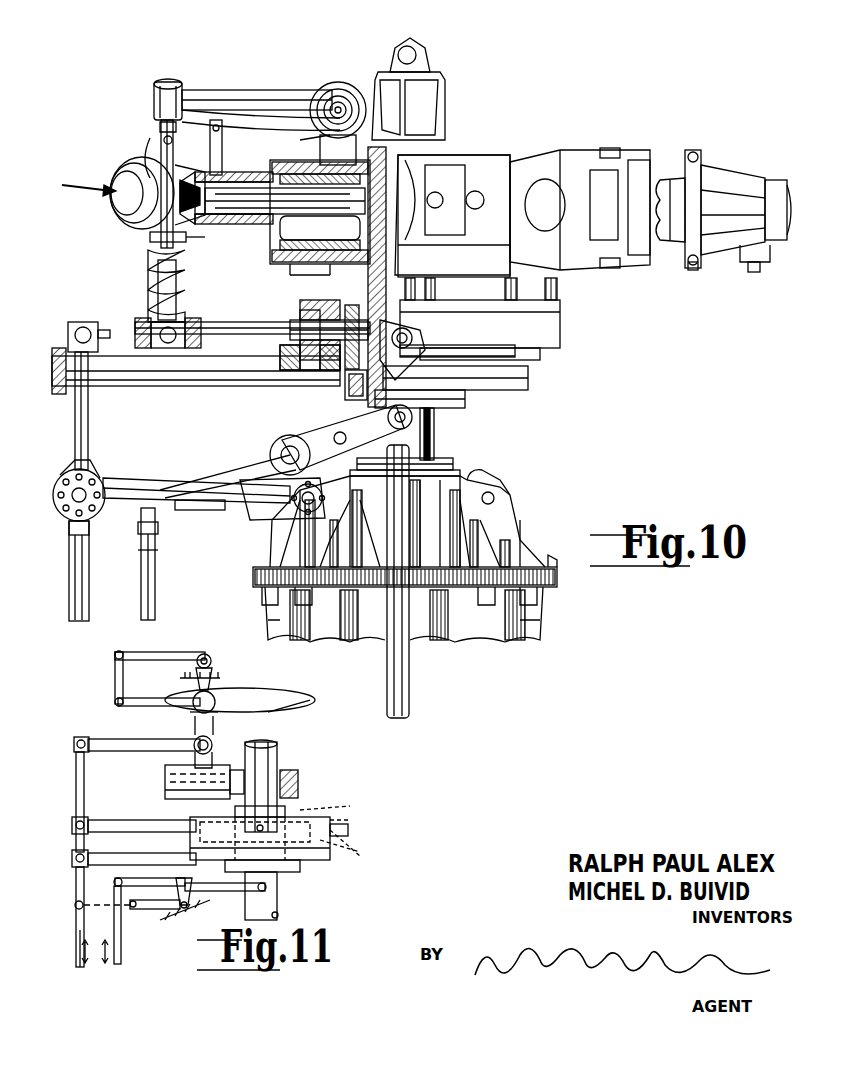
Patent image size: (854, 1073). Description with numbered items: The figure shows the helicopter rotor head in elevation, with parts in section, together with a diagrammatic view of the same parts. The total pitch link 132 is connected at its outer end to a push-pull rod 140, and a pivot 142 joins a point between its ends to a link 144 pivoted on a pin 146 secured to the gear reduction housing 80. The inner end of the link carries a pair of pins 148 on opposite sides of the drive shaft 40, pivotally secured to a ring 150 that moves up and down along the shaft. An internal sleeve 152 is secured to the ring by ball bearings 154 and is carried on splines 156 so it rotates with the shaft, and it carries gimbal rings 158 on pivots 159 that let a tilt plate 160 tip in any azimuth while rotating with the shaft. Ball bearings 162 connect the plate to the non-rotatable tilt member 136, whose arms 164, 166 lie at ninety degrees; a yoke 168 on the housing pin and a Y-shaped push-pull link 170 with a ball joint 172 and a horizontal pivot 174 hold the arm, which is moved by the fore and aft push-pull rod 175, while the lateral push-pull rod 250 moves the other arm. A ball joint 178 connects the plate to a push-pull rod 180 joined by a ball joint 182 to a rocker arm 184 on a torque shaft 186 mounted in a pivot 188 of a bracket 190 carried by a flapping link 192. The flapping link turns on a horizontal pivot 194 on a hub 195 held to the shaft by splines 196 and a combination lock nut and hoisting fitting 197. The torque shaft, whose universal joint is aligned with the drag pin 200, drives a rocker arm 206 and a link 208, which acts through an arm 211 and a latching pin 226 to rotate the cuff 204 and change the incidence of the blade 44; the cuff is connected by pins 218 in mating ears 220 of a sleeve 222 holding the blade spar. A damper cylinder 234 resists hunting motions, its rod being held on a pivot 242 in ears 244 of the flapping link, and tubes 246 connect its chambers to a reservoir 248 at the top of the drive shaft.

In FIG. 10, the drive shaft 40 is at (440, 470).
In FIG. 11, the drive shaft 40 is at (272, 758).
In FIG. 11, the blade 44 is at (280, 710).
In FIG. 10, the gear reduction housing 80 is at (490, 520).
In FIG. 10, the total pitch link 132 is at (195, 478).
In FIG. 11, the total pitch link 132 is at (206, 884).
In FIG. 10, the tilt member 136 is at (160, 372).
In FIG. 10, the push-pull rod 140 is at (158, 570).
In FIG. 11, the push-pull rod 140 is at (120, 930).
In FIG. 10, the pivot 142 is at (250, 470).
In FIG. 11, the pivot 142 is at (186, 870).
In FIG. 10, the link 144 is at (282, 436).
In FIG. 10, the pin 146 is at (305, 508).
In FIG. 11, the pin 146 is at (195, 915).
In FIG. 10, the pins 148 is at (436, 430).
In FIG. 10, the ring 150 is at (470, 420).
In FIG. 11, the ring 150 is at (290, 872).
In FIG. 10, the internal sleeve 152 is at (355, 292).
In FIG. 11, the internal sleeve 152 is at (220, 812).
In FIG. 10, the ball bearings 154 is at (345, 385).
In FIG. 10, the splines 156 is at (445, 292).
In FIG. 10, the gimbal rings 158 is at (300, 320).
In FIG. 11, the gimbal rings 158 is at (360, 843).
In FIG. 11, the pivots 159 is at (344, 803).
In FIG. 10, the tilt plate 160 is at (246, 326).
In FIG. 11, the tilt plate 160 is at (158, 824).
In FIG. 10, the ball bearings 162 is at (298, 372).
In FIG. 10, the arm 164 is at (128, 345).
In FIG. 11, the arm 164 is at (142, 860).
In FIG. 10, the arm 166 is at (490, 380).
In FIG. 10, the yoke 168 is at (185, 512).
In FIG. 11, the yoke 168 is at (168, 910).
In FIG. 10, the Y-shaped push-pull link 170 is at (75, 445).
In FIG. 11, the Y-shaped push-pull link 170 is at (76, 880).
In FIG. 10, the ball joint 172 is at (70, 328).
In FIG. 10, the pivot 174 is at (72, 500).
In FIG. 10, the push-pull rod 175 is at (70, 560).
In FIG. 11, the push-pull rod 175 is at (76, 930).
In FIG. 10, the ball joint 178 is at (148, 300).
In FIG. 10, the push-pull rod 180 is at (160, 190).
In FIG. 11, the push-pull rod 180 is at (76, 786).
In FIG. 10, the ball joint 182 is at (153, 99).
In FIG. 10, the rocker arm 184 is at (265, 100).
In FIG. 11, the rocker arm 184 is at (106, 740).
In FIG. 11, the torque shaft 186 is at (189, 723).
In FIG. 10, the pivot 188 is at (345, 100).
In FIG. 10, the bracket 190 is at (300, 90).
In FIG. 11, the bracket 190 is at (212, 742).
In FIG. 10, the flapping link 192 is at (252, 225).
In FIG. 11, the flapping link 192 is at (165, 772).
In FIG. 10, the horizontal pivot 194 is at (282, 212).
In FIG. 10, the hub 195 is at (290, 266).
In FIG. 10, the splines 196 is at (410, 160).
In FIG. 10, the combination lock nut and hoisting fitting 197 is at (500, 152).
In FIG. 10, the drag pin 200 is at (660, 178).
In FIG. 11, the cuff 204 is at (215, 695).
In FIG. 11, the rocker arm 206 is at (143, 655).
In FIG. 11, the link 208 is at (115, 672).
In FIG. 11, the arm 211 is at (170, 684).
In FIG. 10, the pins 218 is at (755, 266).
In FIG. 10, the ears 220 is at (694, 268).
In FIG. 10, the sleeve 222 is at (768, 180).
In FIG. 11, the latching pin 226 is at (115, 702).
In FIG. 10, the cylinder 234 is at (67, 184).
In FIG. 10, the pivot 242 is at (150, 236).
In FIG. 10, the ears 244 is at (138, 210).
In FIG. 10, the tubes 246 is at (155, 140).
In FIG. 10, the reservoir 248 is at (450, 100).
In FIG. 10, the push-pull rod 250 is at (410, 700).